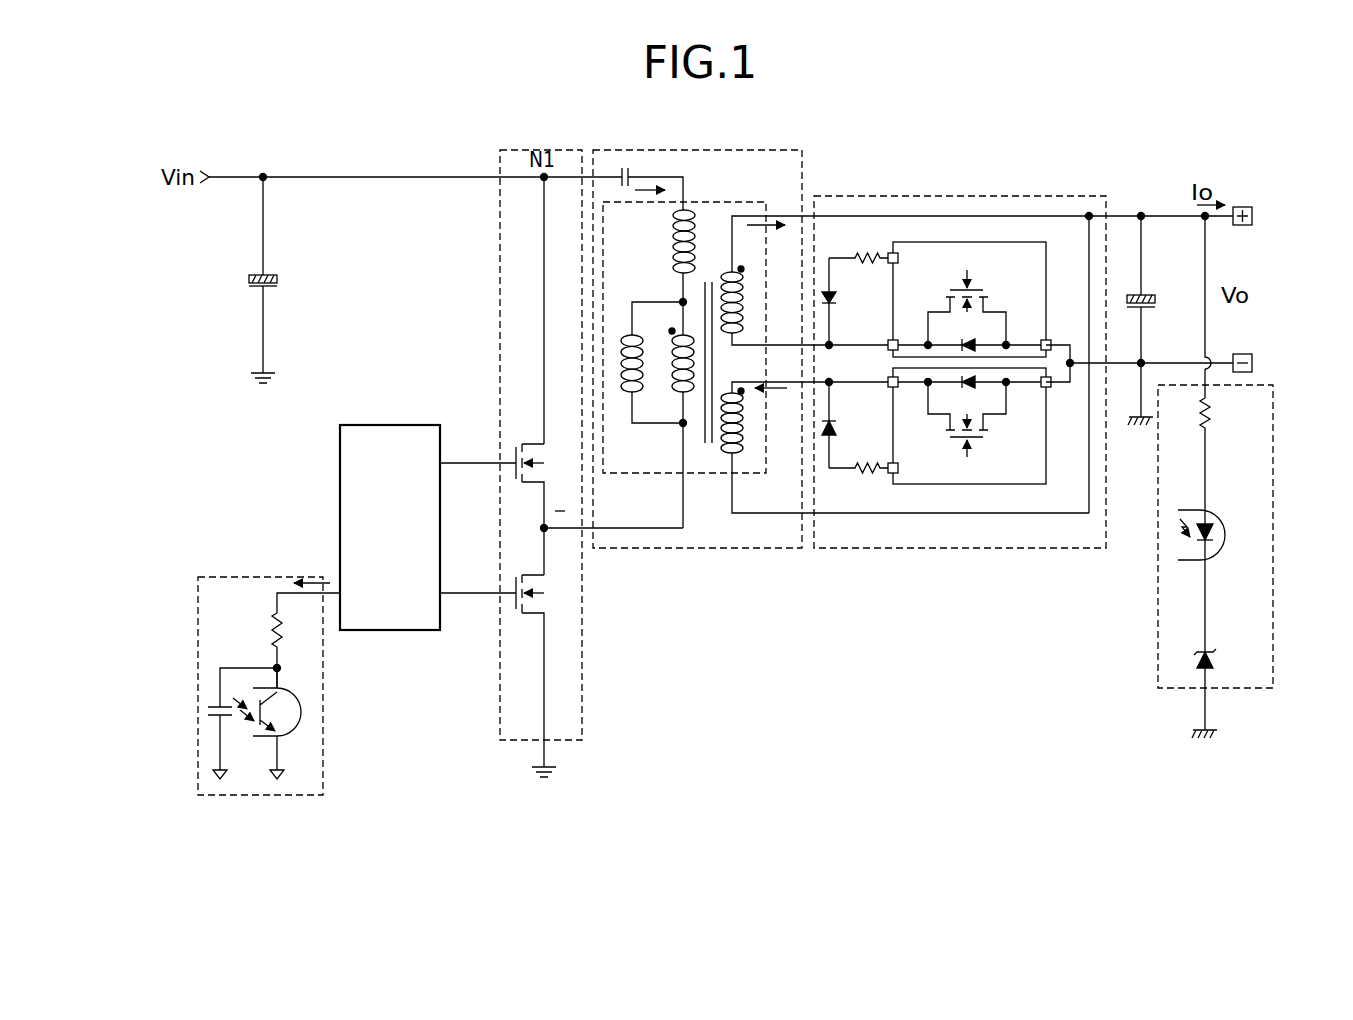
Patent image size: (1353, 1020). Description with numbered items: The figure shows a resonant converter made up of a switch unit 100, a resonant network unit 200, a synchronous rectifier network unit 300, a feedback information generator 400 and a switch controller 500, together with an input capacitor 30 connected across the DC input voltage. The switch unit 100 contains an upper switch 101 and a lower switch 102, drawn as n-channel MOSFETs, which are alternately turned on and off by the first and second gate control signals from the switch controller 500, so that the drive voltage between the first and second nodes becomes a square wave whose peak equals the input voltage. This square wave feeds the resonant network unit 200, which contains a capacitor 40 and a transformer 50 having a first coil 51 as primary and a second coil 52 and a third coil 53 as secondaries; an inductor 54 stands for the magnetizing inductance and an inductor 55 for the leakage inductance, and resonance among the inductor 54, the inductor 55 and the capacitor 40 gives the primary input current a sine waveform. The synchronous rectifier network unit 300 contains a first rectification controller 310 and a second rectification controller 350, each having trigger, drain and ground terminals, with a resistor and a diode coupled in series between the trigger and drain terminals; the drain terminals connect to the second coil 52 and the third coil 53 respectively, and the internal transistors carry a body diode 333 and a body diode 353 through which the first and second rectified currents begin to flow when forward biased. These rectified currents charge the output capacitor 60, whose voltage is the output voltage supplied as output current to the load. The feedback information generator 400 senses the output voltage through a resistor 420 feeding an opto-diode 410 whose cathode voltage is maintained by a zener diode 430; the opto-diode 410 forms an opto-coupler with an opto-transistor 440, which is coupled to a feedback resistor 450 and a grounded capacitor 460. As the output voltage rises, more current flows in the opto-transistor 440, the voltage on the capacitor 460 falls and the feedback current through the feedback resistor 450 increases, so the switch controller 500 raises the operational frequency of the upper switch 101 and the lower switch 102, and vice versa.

The input capacitor 30 is at (275, 273).
The capacitor 40 is at (632, 176).
The transformer 50 is at (727, 202).
The first coil 51 is at (675, 383).
The second coil 52 is at (745, 301).
The third coil 53 is at (745, 430).
The inductor 54 is at (631, 334).
The inductor 55 is at (672, 252).
The output capacitor 60 is at (1157, 292).
The switch unit 100 is at (585, 686).
The upper switch 101 is at (509, 509).
The lower switch 102 is at (509, 671).
The resonant network unit 200 is at (708, 150).
The synchronous rectifier network unit 300 is at (975, 196).
The first rectification controller 310 is at (994, 242).
The body diode 333 is at (967, 333).
The second rectification controller 350 is at (994, 484).
The body diode 353 is at (967, 394).
The feedback information generator 400 is at (323, 717).
The opto-diode 410 is at (1214, 511).
The resistor 420 is at (1215, 409).
The zener diode 430 is at (1211, 651).
The opto-transistor 440 is at (289, 690).
The feedback resistor 450 is at (270, 627).
The capacitor 460 is at (226, 719).
The switch controller 500 is at (390, 425).